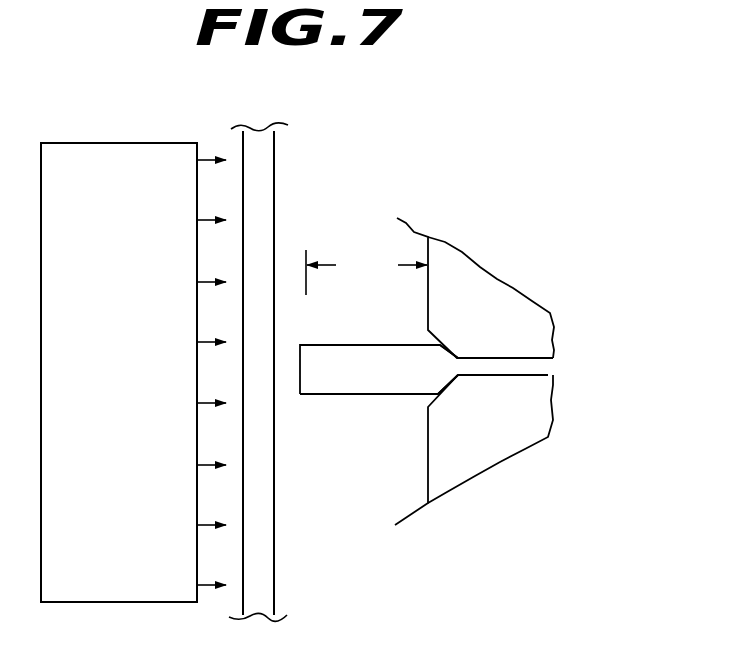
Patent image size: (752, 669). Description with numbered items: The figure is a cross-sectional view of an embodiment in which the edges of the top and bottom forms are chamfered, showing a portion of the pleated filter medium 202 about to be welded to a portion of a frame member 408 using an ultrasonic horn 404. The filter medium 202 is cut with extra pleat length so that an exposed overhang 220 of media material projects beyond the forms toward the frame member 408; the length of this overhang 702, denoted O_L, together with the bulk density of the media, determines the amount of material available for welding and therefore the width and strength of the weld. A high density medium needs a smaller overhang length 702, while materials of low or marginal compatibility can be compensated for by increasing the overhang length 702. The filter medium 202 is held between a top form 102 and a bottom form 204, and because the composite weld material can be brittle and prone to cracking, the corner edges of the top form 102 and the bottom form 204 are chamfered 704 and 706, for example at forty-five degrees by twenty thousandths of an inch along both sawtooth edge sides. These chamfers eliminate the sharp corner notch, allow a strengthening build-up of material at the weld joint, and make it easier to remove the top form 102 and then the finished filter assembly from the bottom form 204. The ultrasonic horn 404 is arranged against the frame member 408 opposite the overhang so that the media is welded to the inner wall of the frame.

The top form 102 is at (498, 278).
The filter medium 202 is at (543, 370).
The bottom form 204 is at (490, 475).
The exposed overhang 220 is at (333, 395).
The ultrasonic horn 404 is at (96, 143).
The frame member 408 is at (274, 540).
The overhang length 702 is at (360, 243).
The chamfer 704 is at (433, 337).
The chamfer 706 is at (433, 403).